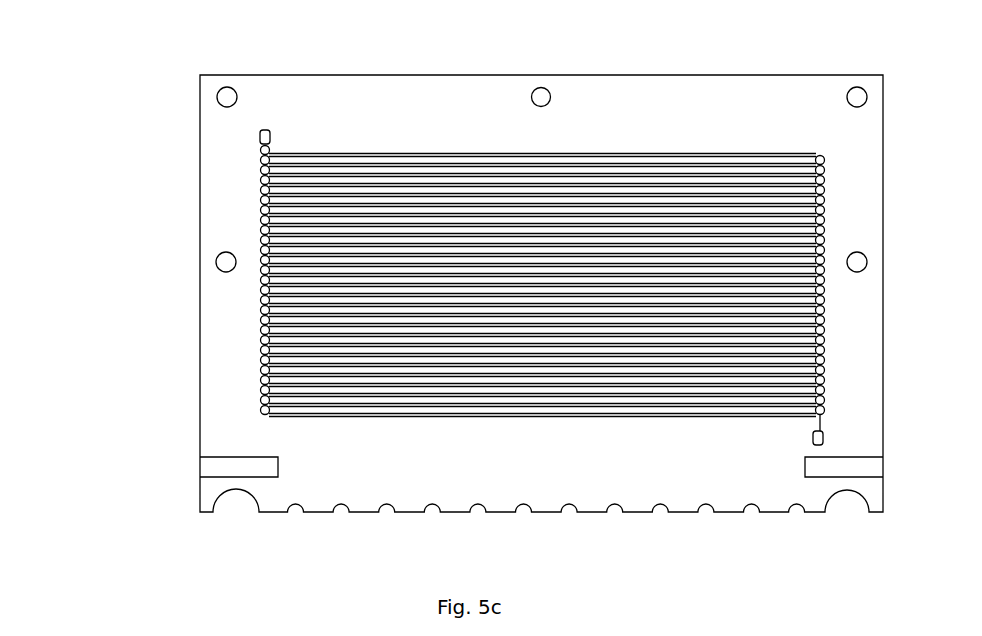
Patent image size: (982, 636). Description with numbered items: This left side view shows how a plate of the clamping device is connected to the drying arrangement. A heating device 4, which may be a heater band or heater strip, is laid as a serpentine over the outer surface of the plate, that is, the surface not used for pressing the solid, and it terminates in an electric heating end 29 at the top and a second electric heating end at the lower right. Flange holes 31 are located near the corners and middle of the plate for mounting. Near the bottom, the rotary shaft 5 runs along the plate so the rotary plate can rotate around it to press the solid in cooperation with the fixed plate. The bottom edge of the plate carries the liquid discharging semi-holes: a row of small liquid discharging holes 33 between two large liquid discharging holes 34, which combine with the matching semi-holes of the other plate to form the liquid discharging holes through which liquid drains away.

The electric heating end 29 is at (259, 133).
The heating device 4 is at (260, 222).
The flange hole 31 is at (216, 258).
The rotary shaft 5 is at (826, 468).
The small liquid discharging hole 33 is at (333, 505).
The large liquid discharging hole 34 is at (237, 512).